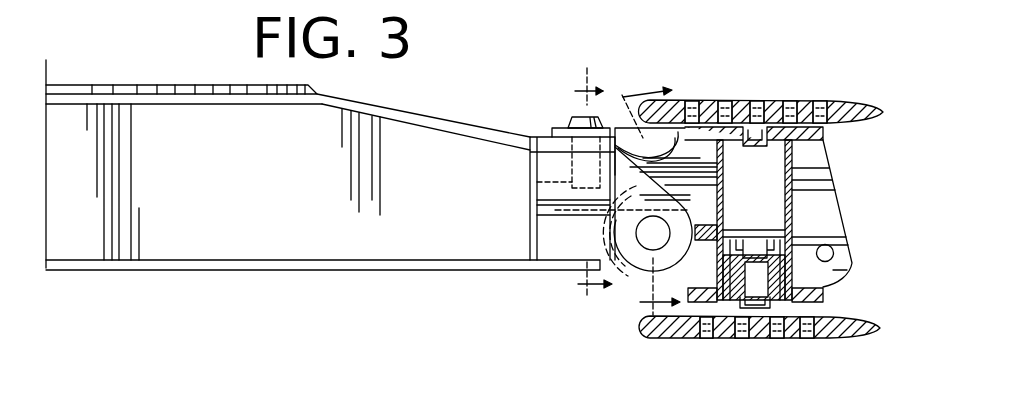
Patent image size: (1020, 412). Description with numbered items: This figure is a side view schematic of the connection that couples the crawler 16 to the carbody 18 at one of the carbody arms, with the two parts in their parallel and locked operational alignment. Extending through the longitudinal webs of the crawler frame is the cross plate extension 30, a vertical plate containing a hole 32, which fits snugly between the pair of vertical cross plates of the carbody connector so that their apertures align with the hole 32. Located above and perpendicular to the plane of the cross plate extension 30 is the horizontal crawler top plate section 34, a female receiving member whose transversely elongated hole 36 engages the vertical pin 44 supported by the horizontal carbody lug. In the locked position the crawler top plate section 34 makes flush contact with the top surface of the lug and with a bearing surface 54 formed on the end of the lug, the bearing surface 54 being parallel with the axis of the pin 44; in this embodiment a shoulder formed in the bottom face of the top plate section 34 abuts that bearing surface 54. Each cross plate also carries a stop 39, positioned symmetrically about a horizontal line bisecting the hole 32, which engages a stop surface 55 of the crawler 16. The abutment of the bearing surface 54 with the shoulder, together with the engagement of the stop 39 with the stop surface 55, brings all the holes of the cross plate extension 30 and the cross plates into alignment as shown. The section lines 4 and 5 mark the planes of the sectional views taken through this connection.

The crawler 16 is at (840, 207).
The carbody 18 is at (237, 203).
The cross plate extension 30 is at (641, 283).
The hole 32 is at (648, 238).
The horizontal crawler top plate section 34 is at (615, 147).
The hole 36 is at (567, 127).
The stop 39 is at (723, 240).
The vertical pin 44 is at (578, 115).
The bearing surface 54 is at (656, 155).
The stop surface 55 is at (722, 228).
The section line 4- 4 is at (590, 187).
The section line 5- 5 is at (647, 200).